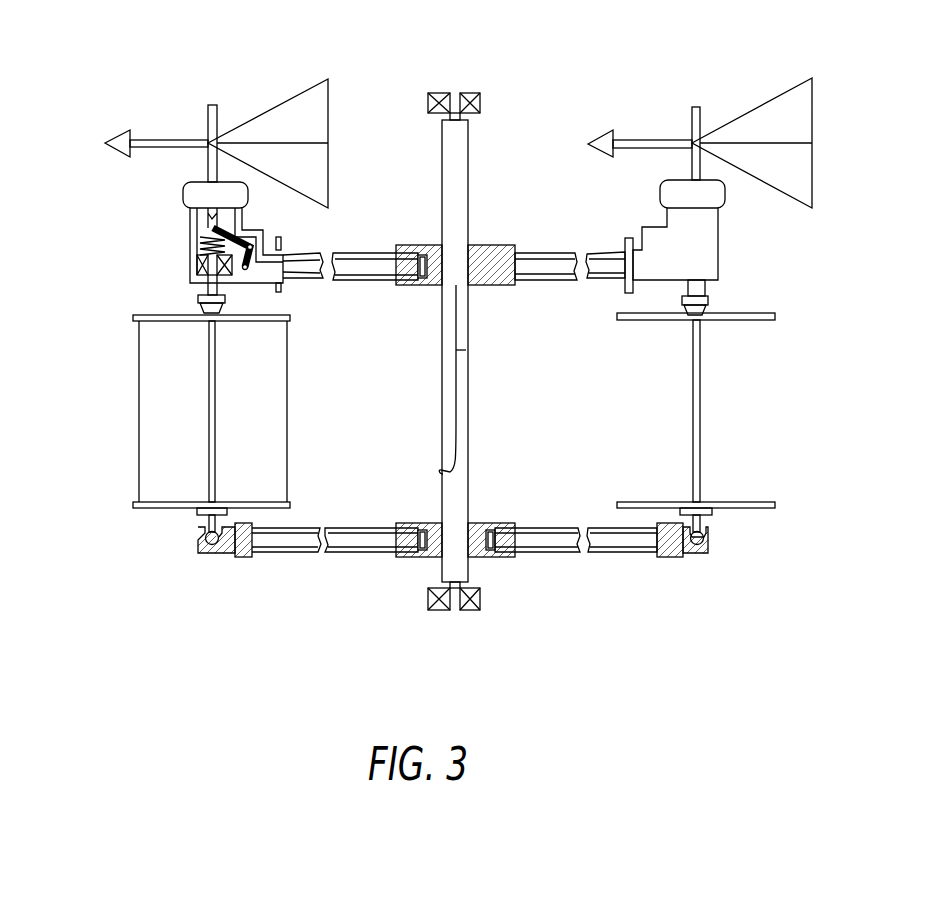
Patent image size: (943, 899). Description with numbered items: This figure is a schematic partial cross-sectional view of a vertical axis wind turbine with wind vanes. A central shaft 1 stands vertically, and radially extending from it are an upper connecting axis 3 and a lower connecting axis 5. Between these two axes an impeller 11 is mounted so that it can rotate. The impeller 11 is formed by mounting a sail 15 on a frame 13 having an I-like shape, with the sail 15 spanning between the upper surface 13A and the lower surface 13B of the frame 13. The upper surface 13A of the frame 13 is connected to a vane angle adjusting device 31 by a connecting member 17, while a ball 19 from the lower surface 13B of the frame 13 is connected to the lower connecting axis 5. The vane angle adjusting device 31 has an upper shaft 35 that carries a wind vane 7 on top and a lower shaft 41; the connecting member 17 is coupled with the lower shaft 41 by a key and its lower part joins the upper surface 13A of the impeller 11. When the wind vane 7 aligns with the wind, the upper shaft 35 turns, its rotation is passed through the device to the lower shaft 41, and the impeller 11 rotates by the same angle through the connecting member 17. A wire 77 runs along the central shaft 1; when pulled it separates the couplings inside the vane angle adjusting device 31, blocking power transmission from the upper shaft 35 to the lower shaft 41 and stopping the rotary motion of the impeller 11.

The central shaft 1 is at (466, 408).
The upper connecting axis 3 is at (386, 253).
The lower connecting axis 5 is at (556, 528).
The wind vane 7 is at (265, 118).
The impeller 11 is at (233, 411).
The frame 13 is at (224, 357).
The upper surface of the frame 13A is at (133, 318).
The lower surface of the frame 13B is at (143, 509).
The sail 15 is at (160, 425).
The connecting member 17 is at (226, 300).
The ball joint 19 is at (212, 554).
The vane angle adjusting device 31 is at (182, 233).
The upper shaft 35 is at (214, 105).
The lower shaft 41 is at (190, 271).
The wire 77 is at (468, 350).